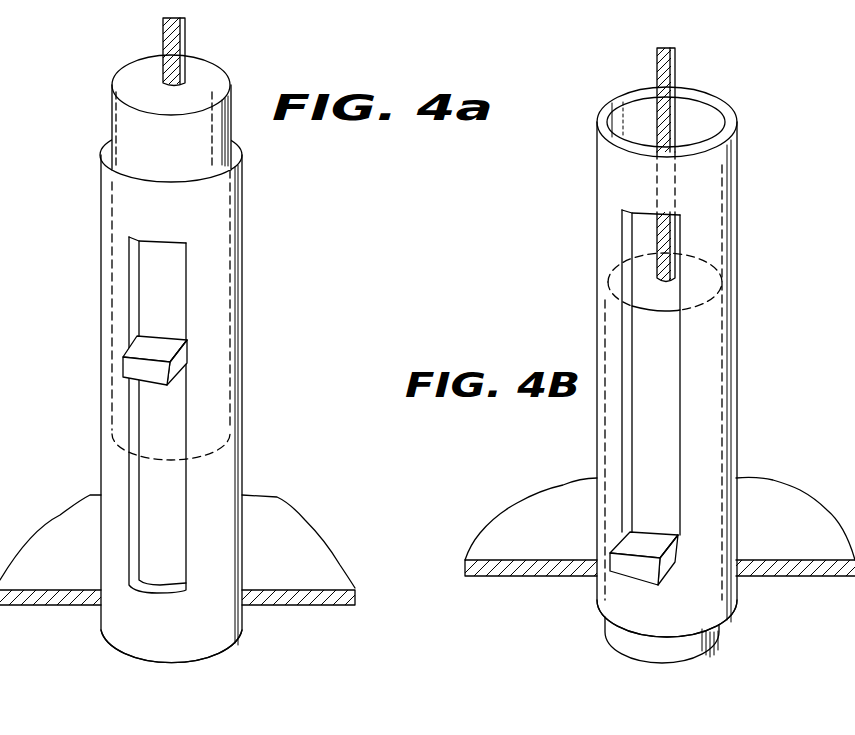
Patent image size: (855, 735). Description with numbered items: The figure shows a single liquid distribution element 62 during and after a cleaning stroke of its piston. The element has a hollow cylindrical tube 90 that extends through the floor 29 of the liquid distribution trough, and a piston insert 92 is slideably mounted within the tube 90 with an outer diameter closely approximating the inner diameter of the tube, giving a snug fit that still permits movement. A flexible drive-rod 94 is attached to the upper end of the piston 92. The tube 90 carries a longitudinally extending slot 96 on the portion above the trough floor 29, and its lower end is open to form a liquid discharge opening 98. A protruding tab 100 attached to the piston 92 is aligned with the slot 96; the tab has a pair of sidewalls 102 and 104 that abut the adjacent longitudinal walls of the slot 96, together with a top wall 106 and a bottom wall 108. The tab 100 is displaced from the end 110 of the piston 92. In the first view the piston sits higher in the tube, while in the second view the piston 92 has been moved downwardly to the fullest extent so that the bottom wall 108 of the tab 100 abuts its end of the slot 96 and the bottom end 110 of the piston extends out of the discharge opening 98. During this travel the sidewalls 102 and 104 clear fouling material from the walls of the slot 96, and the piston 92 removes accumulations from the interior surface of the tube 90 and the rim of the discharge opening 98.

In FIG. 4A, the floor 29 is at (78, 598).
In FIG. 4B, the floor 29 is at (478, 570).
In FIG. 4A, the liquid distribution element 62 is at (101, 273).
In FIG. 4B, the liquid distribution element 62 is at (740, 241).
In FIG. 4A, the hollow cylindrical tube 90 is at (227, 472).
In FIG. 4B, the hollow cylindrical tube 90 is at (733, 412).
In FIG. 4A, the piston insert 92 is at (117, 113).
In FIG. 4B, the piston insert 92 is at (640, 285).
In FIG. 4A, the flexible drive-rod 94 is at (185, 33).
In FIG. 4B, the flexible drive-rod 94 is at (675, 68).
In FIG. 4A, the slot 96 is at (183, 296).
In FIG. 4B, the slot 96 is at (675, 358).
In FIG. 4A, the liquid discharge opening 98 is at (213, 652).
In FIG. 4B, the liquid discharge opening 98 is at (697, 627).
In FIG. 4A, the protruding tab 100 is at (184, 351).
In FIG. 4B, the protruding tab 100 is at (670, 537).
In FIG. 4A, the sidewall 102 is at (180, 366).
In FIG. 4B, the sidewall 102 is at (667, 567).
In FIG. 4A, the sidewall 104 is at (125, 365).
In FIG. 4B, the sidewall 104 is at (610, 558).
In FIG. 4A, the top wall 106 is at (147, 347).
In FIG. 4B, the top wall 106 is at (630, 537).
In FIG. 4A, the bottom wall 108 is at (148, 380).
In FIG. 4B, the bottom wall 108 is at (628, 580).
In FIG. 4A, the end of the piston 110 is at (150, 460).
In FIG. 4B, the end of the piston 110 is at (647, 663).